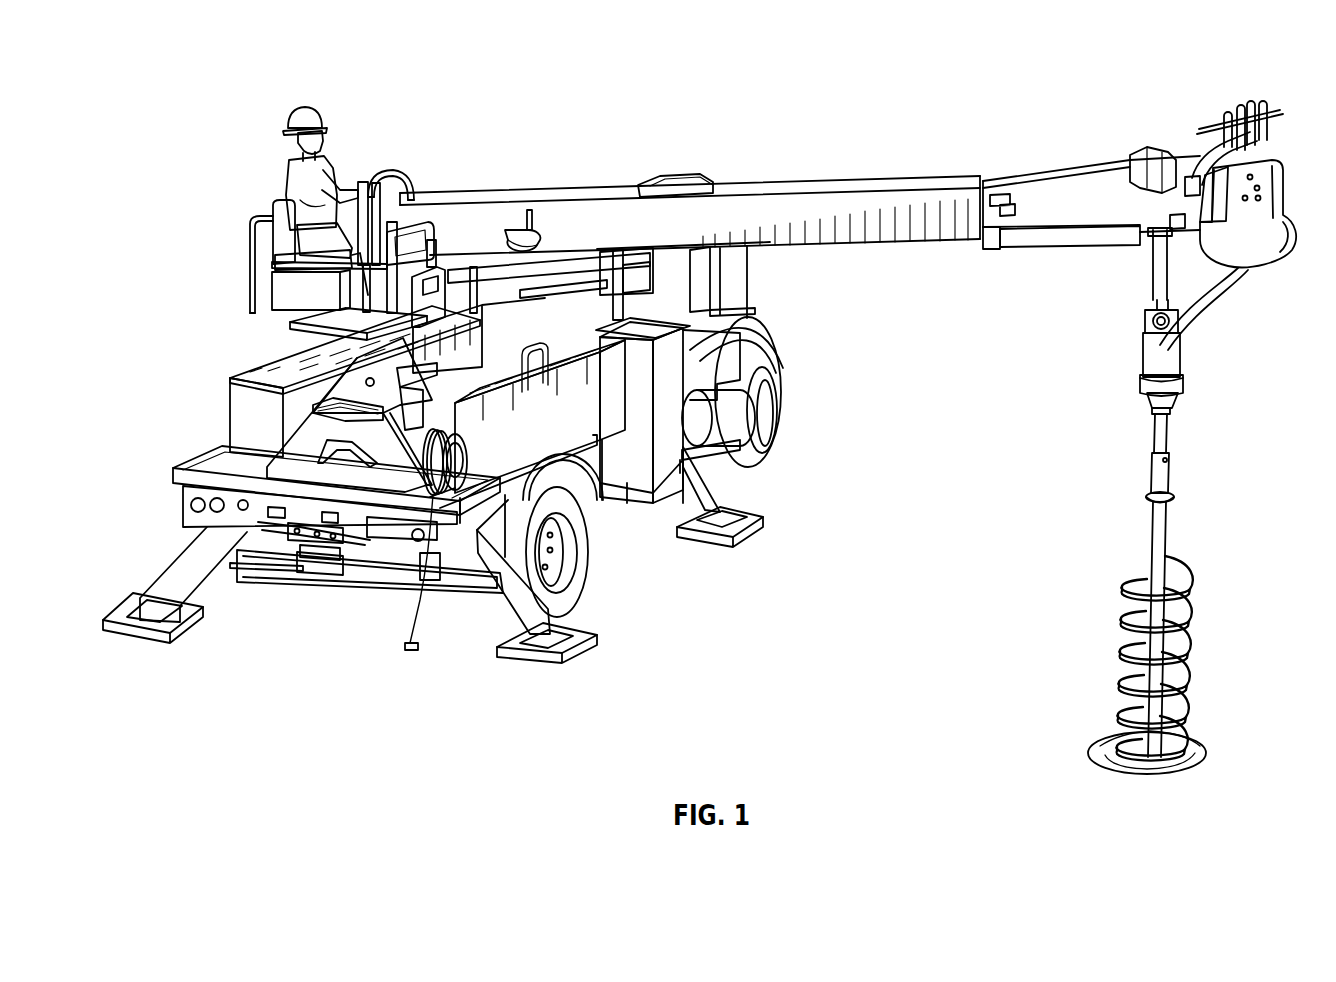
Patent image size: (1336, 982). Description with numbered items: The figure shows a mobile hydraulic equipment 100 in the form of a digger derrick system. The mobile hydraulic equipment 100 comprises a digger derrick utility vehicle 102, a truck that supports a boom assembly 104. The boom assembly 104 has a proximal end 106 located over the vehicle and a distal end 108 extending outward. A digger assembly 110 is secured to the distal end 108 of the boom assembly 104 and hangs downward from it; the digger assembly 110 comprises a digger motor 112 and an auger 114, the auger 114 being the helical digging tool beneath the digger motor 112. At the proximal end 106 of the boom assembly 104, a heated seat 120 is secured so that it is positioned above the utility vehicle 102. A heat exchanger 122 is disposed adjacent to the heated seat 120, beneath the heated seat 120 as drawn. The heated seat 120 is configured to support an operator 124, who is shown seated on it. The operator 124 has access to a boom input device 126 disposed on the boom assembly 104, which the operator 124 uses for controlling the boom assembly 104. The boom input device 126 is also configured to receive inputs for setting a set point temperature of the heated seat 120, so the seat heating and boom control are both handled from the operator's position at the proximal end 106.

The mobile hydraulic equipment 100 is at (1058, 78).
The digger derrick utility vehicle 102 is at (233, 375).
The boom assembly 104 is at (770, 182).
The proximal end 106 is at (448, 187).
The distal end 108 is at (935, 176).
The digger assembly 110 is at (1216, 442).
The digger motor 112 is at (1182, 362).
The auger 114 is at (1170, 562).
The heated seat 120 is at (283, 203).
The heat exchanger 122 is at (283, 293).
The operator 124 is at (292, 113).
The boom input device 126 is at (383, 167).